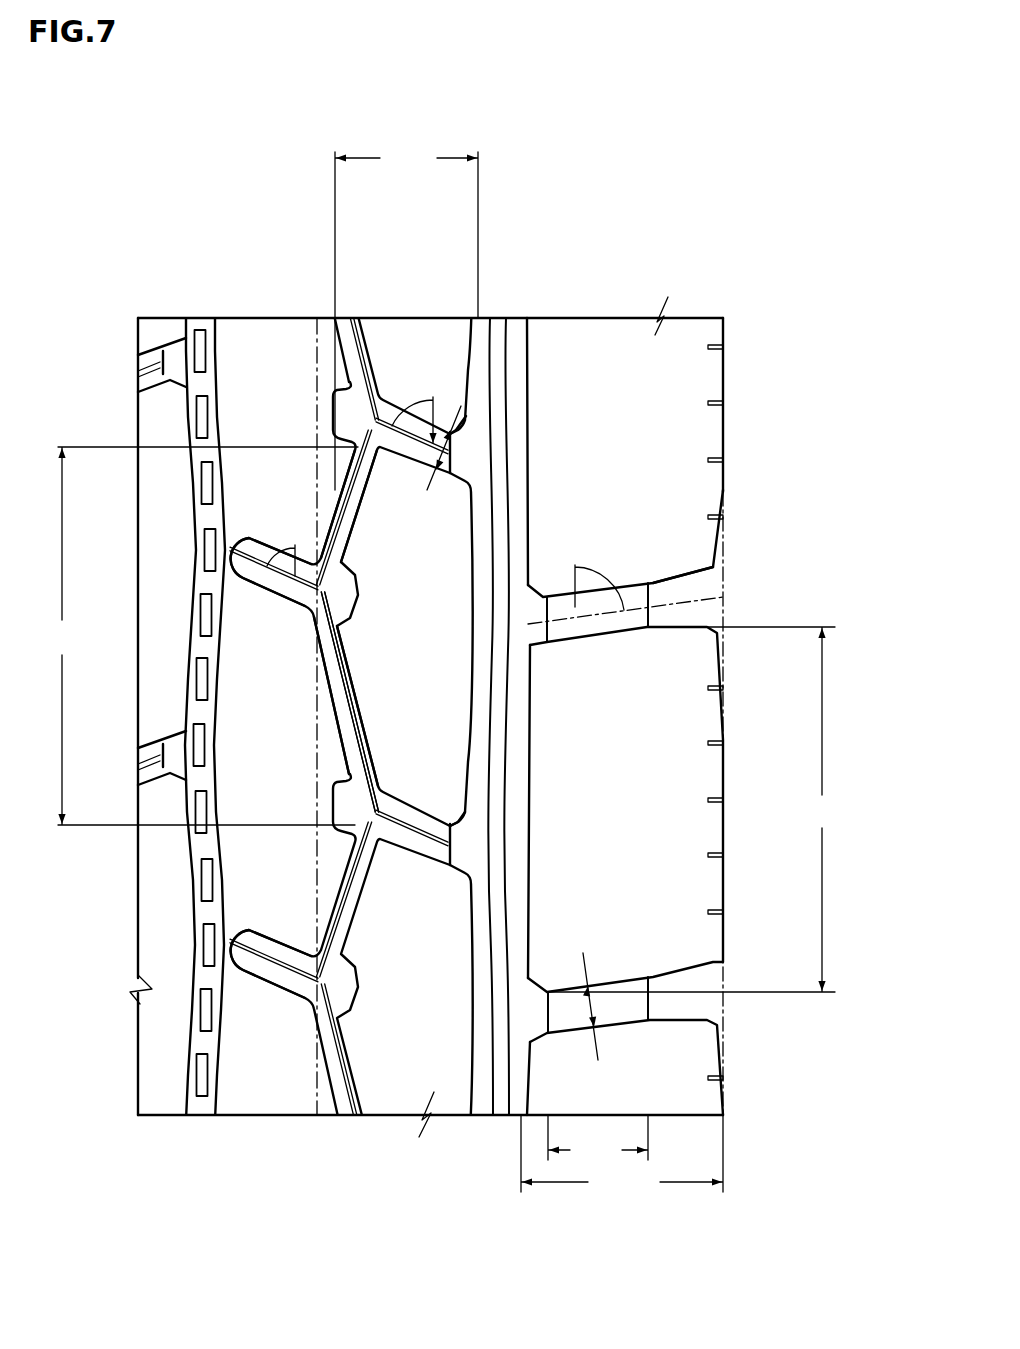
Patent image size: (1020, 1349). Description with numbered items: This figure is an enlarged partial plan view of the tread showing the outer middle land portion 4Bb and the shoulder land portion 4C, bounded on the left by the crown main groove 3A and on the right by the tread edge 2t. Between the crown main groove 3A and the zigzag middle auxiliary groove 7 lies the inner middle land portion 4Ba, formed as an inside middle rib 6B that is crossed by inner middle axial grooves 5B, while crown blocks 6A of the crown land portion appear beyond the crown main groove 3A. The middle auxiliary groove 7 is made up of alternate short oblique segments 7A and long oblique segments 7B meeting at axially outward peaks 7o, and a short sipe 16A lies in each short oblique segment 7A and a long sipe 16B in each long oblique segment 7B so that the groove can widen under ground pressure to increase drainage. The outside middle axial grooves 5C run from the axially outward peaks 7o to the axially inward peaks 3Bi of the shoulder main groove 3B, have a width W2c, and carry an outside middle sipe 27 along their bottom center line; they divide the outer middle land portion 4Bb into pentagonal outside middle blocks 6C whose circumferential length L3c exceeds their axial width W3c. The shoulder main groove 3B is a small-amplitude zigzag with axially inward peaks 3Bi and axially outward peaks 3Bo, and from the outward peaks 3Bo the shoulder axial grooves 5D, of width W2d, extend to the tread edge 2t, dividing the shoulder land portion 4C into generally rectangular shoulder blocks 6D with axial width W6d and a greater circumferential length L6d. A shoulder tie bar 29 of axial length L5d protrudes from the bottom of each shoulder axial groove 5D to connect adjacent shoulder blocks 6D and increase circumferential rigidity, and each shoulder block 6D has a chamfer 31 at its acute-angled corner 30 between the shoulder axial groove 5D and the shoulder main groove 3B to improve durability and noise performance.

The crown main groove 3A is at (191, 338).
The inner middle land portion 4Ba is at (271, 338).
The inside middle rib 6B is at (285, 583).
The middle auxiliary groove 7 is at (366, 335).
The outer middle land portion 4Bb is at (409, 338).
The outside middle axial groove 5C is at (465, 423).
The shoulder main groove 3B is at (518, 336).
The shoulder land portion 4C is at (625, 661).
The tread edge 2t is at (726, 404).
The axially outward peak 7o is at (350, 417).
The axially inward peak 3Bi is at (506, 431).
The short oblique segment 7A is at (344, 477).
The short sipe 16A is at (341, 505).
The shoulder block 6D is at (646, 497).
The inner middle axial groove 5B is at (267, 578).
The shoulder tie bar 29 is at (625, 590).
The shoulder axial groove 5D is at (634, 905).
The outside middle block 6C is at (405, 636).
The axially outward peak 3Bo is at (522, 634).
The long oblique segment 7B is at (322, 663).
The long sipe 16B is at (335, 700).
The crown block 6A is at (184, 957).
The outside middle sipe 27 is at (253, 828).
The acute-angled corner 30 is at (540, 980).
The chamfer 31 is at (547, 1102).
The axial width of outside middle block W3c is at (406, 318).
The circumferential length of outside middle block L3c is at (199, 636).
The width of outside middle axial groove W2c is at (416, 449).
The width of shoulder axial groove W2d is at (619, 1006).
The circumferential length of shoulder block L6d is at (697, 809).
The axial length of shoulder tie bar L5d is at (598, 1140).
The axial width of shoulder block W6d is at (622, 1156).